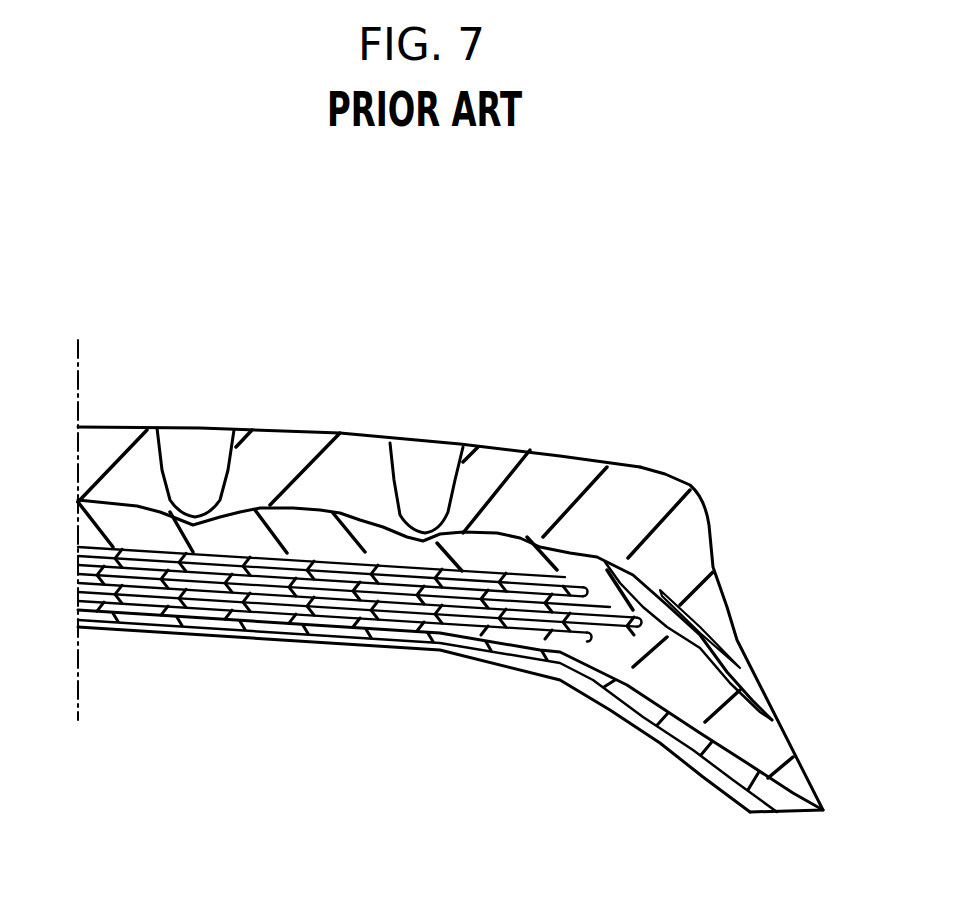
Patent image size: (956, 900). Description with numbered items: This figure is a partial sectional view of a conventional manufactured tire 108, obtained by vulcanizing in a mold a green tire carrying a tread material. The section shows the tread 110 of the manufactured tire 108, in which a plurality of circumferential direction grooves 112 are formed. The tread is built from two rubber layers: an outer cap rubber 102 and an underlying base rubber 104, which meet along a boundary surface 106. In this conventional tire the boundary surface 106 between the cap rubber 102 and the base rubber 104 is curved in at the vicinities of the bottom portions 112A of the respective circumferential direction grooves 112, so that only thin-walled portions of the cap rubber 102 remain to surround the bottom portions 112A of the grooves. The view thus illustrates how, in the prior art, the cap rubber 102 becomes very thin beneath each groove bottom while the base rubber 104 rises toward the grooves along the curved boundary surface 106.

The cap rubber 102 is at (690, 552).
The base rubber 104 is at (745, 661).
The boundary surface 106 is at (495, 530).
The manufactured tire 108 is at (727, 363).
The tread 110 is at (535, 449).
The circumferential direction grooves 112 is at (164, 447).
The bottom portions 112A is at (195, 512).